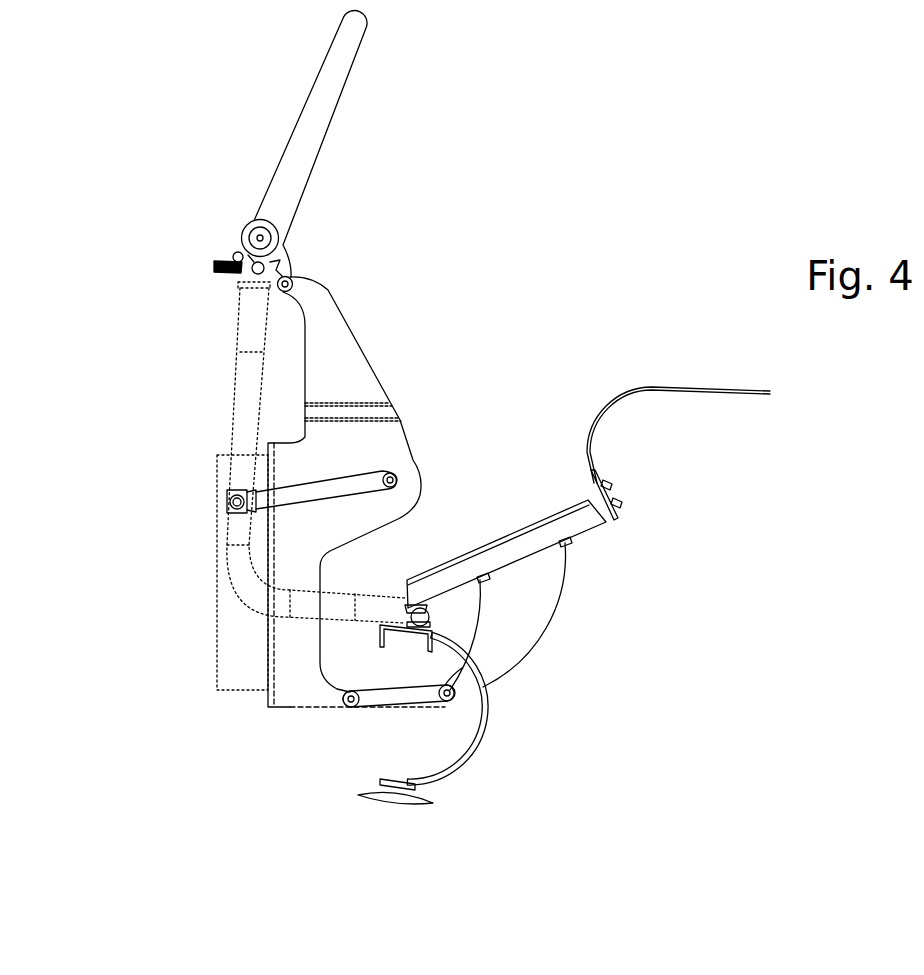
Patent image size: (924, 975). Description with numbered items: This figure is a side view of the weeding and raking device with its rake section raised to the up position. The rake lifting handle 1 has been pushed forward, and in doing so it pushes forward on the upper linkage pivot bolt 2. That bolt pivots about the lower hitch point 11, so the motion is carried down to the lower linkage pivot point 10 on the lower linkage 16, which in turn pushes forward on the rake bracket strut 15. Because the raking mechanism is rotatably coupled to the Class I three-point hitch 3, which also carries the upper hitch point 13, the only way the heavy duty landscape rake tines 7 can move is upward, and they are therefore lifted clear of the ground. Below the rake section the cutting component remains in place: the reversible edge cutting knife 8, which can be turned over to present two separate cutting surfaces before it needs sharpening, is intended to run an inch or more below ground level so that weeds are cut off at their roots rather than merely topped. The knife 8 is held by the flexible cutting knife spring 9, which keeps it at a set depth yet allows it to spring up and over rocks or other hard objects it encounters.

The rake lifting handle 1 is at (330, 80).
The upper linkage pivot bolt 2 is at (291, 279).
The Class I three-point hitch 3 is at (248, 315).
The heavy duty landscape rake tines 7 is at (774, 394).
The reversible edge cutting knife 8 is at (407, 798).
The cutting knife spring 9 is at (488, 729).
The lower linkage pivot point 10 is at (353, 707).
The lower hitch point 11 is at (228, 500).
The upper hitch point 13 is at (215, 263).
The rake bracket strut 15 is at (528, 592).
The lower linkage 16 is at (405, 697).